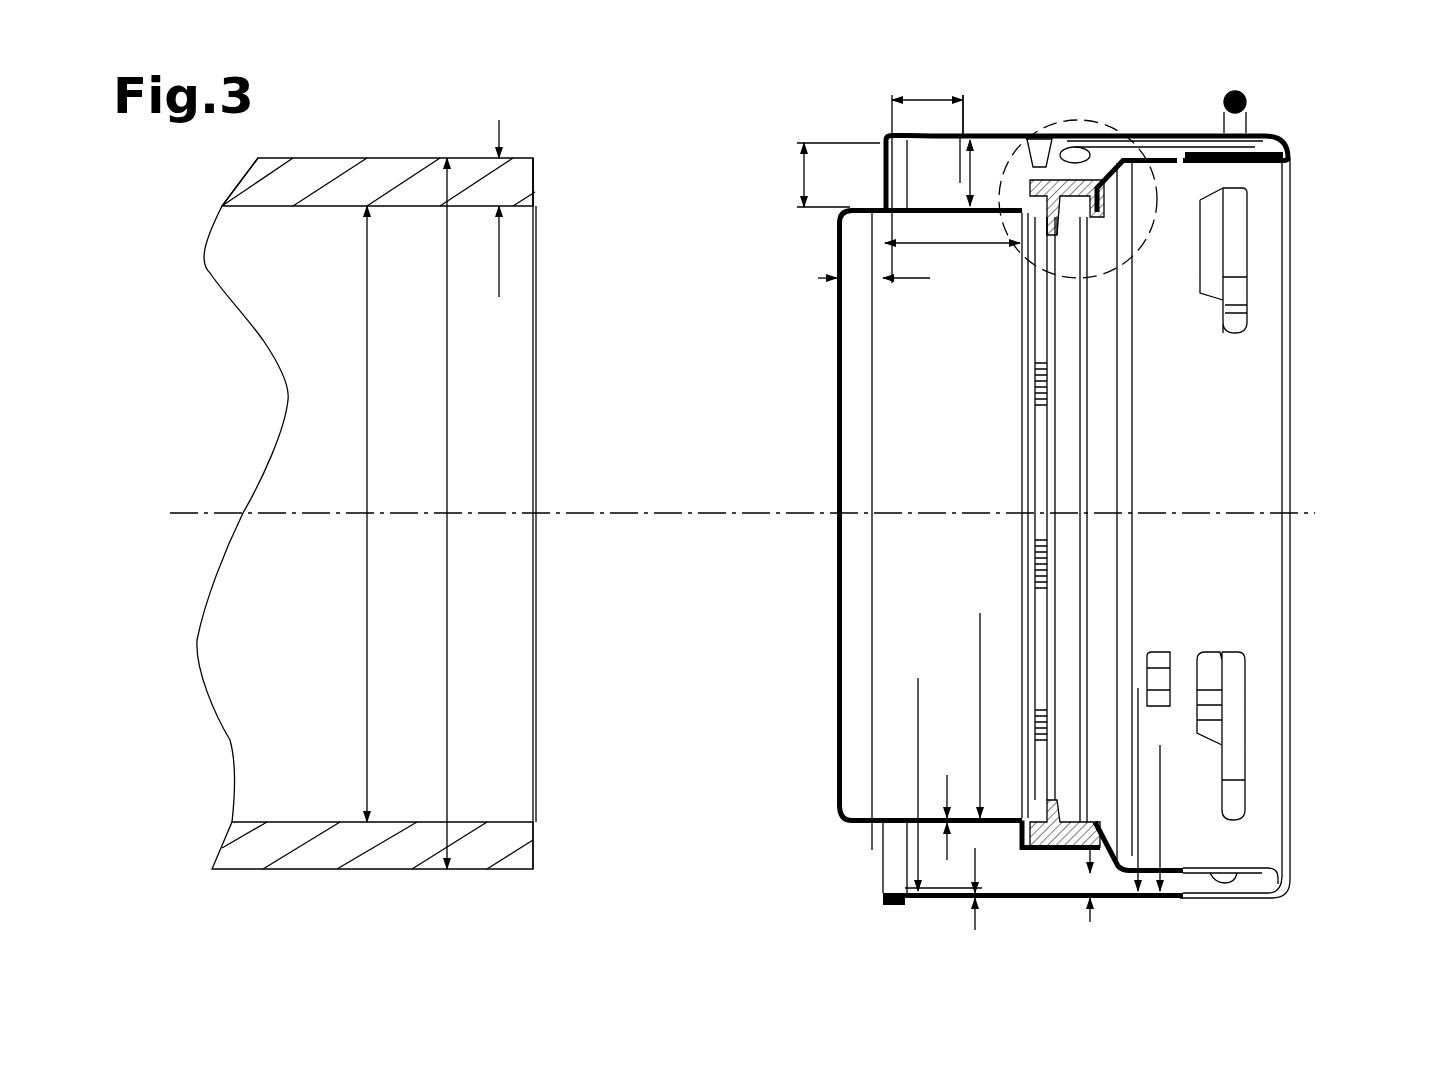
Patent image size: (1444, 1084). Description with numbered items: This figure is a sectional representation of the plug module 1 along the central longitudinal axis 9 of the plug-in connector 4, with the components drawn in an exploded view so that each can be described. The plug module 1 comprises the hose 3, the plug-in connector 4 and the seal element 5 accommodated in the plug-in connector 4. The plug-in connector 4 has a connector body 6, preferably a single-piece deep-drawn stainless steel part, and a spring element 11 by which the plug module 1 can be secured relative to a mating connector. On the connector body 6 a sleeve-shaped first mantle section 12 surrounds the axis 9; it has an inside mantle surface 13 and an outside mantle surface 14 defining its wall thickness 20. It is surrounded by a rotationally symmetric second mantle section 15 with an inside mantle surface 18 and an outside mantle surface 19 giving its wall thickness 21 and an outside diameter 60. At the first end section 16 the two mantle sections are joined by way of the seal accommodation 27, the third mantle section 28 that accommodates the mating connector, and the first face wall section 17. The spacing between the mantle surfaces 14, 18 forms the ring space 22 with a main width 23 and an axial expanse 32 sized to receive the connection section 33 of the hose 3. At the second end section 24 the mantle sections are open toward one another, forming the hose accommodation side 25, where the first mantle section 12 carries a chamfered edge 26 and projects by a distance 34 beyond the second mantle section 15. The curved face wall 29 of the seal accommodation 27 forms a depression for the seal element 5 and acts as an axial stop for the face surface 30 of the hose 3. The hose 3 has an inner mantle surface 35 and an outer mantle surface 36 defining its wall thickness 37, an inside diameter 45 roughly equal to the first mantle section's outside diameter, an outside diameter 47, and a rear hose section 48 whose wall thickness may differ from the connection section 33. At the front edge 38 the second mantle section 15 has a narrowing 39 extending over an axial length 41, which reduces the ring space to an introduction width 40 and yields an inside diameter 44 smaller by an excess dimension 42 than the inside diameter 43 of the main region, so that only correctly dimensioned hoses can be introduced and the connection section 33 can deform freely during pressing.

The plug module 1 is at (1348, 113).
The hose 3 is at (310, 172).
The plug-in connector 4 is at (1330, 143).
The seal element 5 is at (1087, 167).
The connector body 6 is at (1097, 173).
The central longitudinal axis 9 is at (582, 512).
The spring element 11 is at (1248, 93).
The first mantle section 12 is at (1000, 812).
The inside mantle surface of the first mantle section 13 is at (992, 812).
The outside mantle surface of the first mantle section 14 is at (990, 817).
The second mantle section 15 is at (1077, 173).
The first end section 16 is at (1295, 130).
The first face wall section 17 is at (1297, 157).
The inside mantle surface of the second mantle section 18 is at (958, 140).
The outside mantle surface of the second mantle section 19 is at (967, 130).
The wall thickness of the first mantle section 20 is at (940, 797).
The wall thickness of the second mantle section 21 is at (1090, 933).
The ring space 22 is at (1007, 150).
The main width of the ring space 23 is at (975, 178).
The second end section 24 is at (845, 828).
The hose accommodation side 25 is at (862, 850).
The chamfered edge 26 is at (837, 227).
The seal accommodation 27 is at (1137, 147).
The third mantle section 28 is at (1173, 164).
The face wall 29 is at (1030, 172).
The face surface of the hose 30 is at (535, 857).
The axial expanse of the ring space 32 is at (1005, 250).
The connection section 33 is at (530, 140).
The distance 34 is at (818, 268).
The inner mantle surface of the hose 35 is at (273, 217).
The outer mantle surface of the hose 36 is at (359, 146).
The wall thickness of the hose 37 is at (510, 272).
The front edge 38 is at (874, 897).
The narrowing 39 is at (882, 877).
The introduction width of the ring space 40 is at (797, 187).
The axial length of the narrowing 41 is at (922, 97).
The excess dimension 42 is at (973, 928).
The inside diameter of the main region of the second mantle section 43 is at (972, 643).
The inside diameter in the region of the narrowing 44 is at (910, 766).
The inside diameter of the hose 45 is at (357, 763).
The outside diameter of the hose 47 is at (437, 757).
The rear hose section 48 is at (272, 140).
The outside diameter of the second mantle section 60 is at (1162, 860).